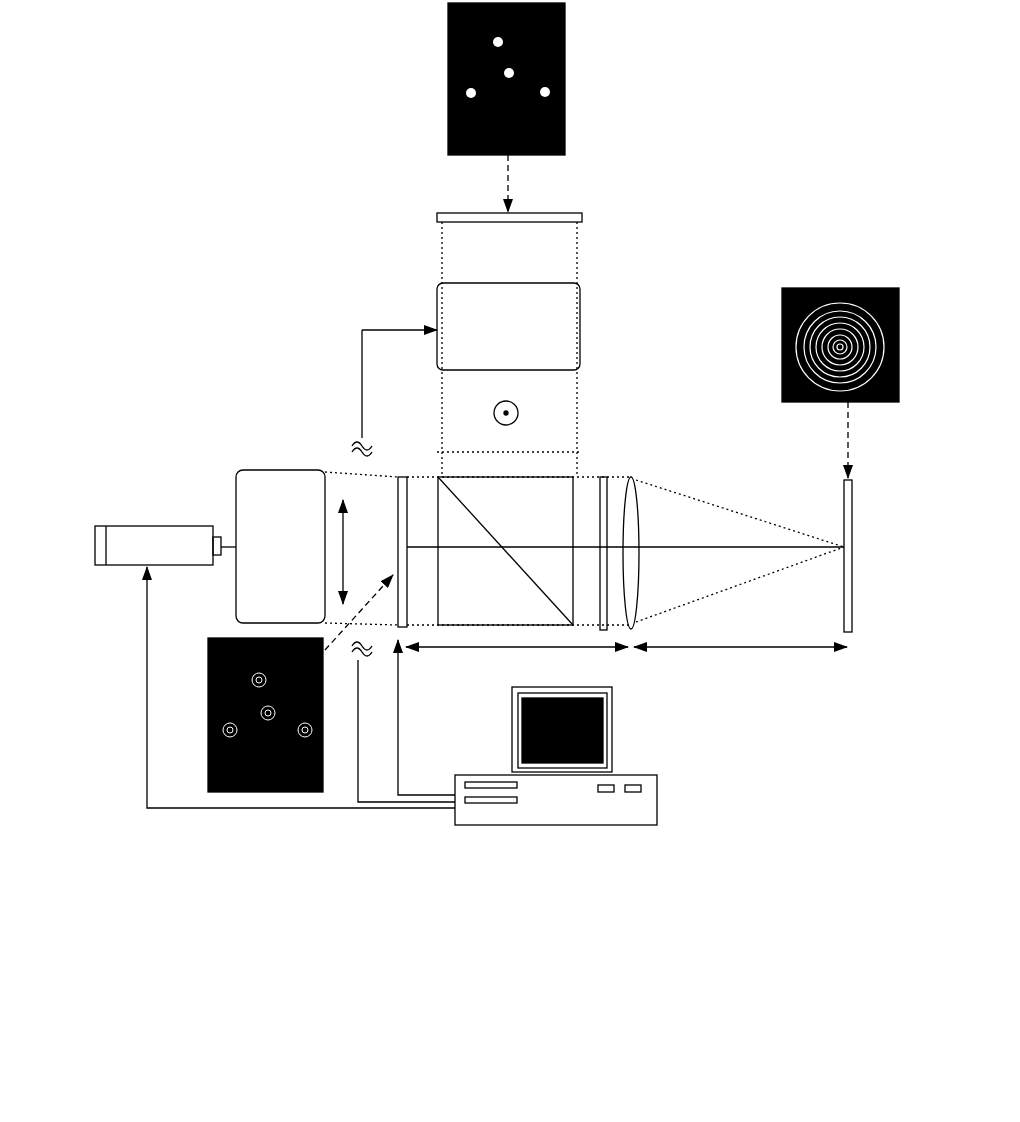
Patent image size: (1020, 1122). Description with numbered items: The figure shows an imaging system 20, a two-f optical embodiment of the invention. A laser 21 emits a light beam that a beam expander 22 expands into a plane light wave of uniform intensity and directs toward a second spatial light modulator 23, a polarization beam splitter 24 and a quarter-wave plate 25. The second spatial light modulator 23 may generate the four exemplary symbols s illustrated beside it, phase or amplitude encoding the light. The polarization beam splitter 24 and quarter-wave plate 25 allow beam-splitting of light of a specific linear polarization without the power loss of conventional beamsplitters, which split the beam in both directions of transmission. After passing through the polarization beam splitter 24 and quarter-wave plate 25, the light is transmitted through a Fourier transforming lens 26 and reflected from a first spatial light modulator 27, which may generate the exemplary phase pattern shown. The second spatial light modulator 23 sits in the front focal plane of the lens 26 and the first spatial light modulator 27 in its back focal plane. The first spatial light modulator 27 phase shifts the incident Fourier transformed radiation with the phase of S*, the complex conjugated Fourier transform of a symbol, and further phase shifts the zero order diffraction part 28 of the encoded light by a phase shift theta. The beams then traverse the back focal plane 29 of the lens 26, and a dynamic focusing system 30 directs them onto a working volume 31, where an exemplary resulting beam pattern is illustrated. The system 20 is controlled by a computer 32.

The 2f imaging system 20 is at (654, 389).
The laser 21 is at (171, 538).
The beam expander 22 is at (309, 488).
The second spatial light modulator 23 is at (403, 477).
The polarization beam splitter 24 is at (560, 490).
The quarter-wave plate 25 is at (605, 496).
The Fourier transforming lens 26 is at (632, 516).
The first spatial light modulator 27 is at (843, 585).
The zero order diffraction part 28 is at (733, 538).
The back focal plane 29 is at (468, 450).
The dynamic focusing system 30 is at (560, 326).
The working volume 31 is at (583, 216).
The computer 32 is at (655, 797).